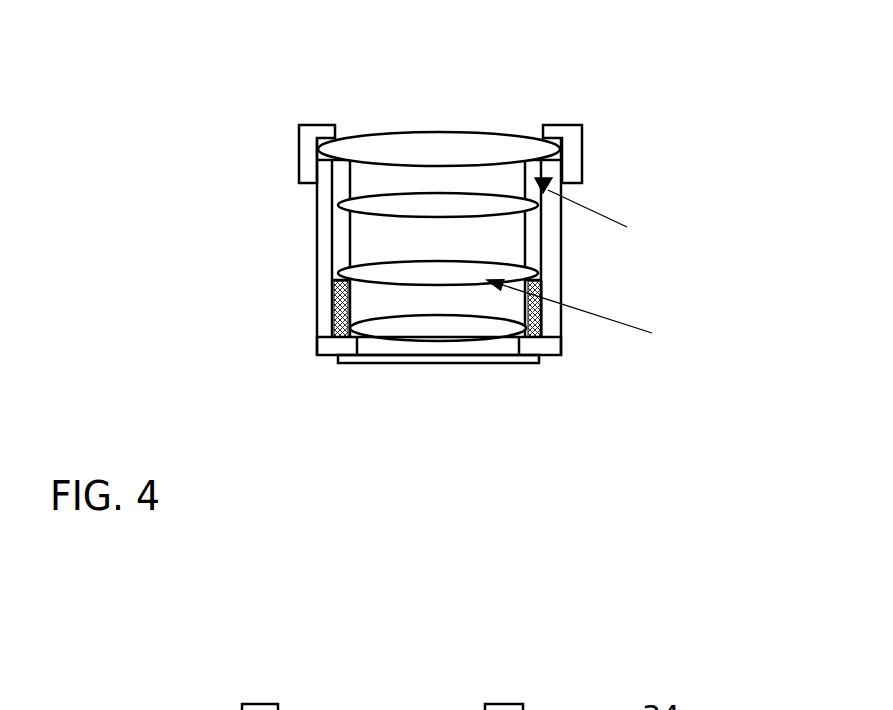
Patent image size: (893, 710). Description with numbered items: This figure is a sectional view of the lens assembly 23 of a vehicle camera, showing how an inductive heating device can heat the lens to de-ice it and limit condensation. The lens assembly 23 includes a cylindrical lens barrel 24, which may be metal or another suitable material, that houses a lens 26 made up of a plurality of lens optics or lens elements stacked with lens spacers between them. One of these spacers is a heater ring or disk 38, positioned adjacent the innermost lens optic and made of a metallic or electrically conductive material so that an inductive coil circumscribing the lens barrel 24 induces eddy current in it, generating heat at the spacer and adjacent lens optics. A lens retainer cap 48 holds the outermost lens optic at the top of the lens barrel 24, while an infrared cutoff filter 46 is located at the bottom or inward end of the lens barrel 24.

The lens assembly 23 is at (211, 279).
The lens barrel 24 is at (295, 227).
The lens 26 is at (458, 110).
The heater ring or disk 38 is at (331, 313).
The infrared cutoff filter 46 is at (477, 384).
The lens retainer cap 48 is at (605, 118).